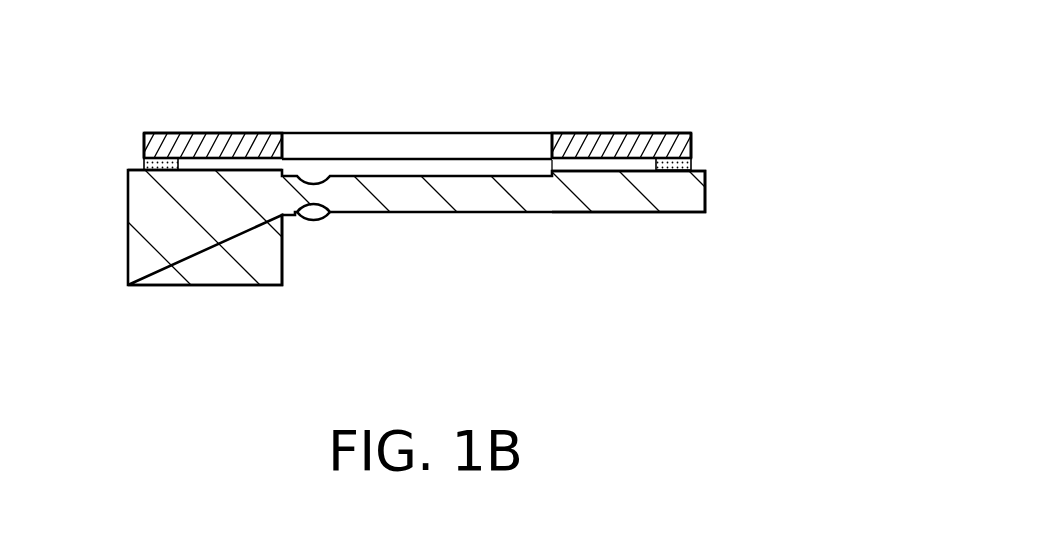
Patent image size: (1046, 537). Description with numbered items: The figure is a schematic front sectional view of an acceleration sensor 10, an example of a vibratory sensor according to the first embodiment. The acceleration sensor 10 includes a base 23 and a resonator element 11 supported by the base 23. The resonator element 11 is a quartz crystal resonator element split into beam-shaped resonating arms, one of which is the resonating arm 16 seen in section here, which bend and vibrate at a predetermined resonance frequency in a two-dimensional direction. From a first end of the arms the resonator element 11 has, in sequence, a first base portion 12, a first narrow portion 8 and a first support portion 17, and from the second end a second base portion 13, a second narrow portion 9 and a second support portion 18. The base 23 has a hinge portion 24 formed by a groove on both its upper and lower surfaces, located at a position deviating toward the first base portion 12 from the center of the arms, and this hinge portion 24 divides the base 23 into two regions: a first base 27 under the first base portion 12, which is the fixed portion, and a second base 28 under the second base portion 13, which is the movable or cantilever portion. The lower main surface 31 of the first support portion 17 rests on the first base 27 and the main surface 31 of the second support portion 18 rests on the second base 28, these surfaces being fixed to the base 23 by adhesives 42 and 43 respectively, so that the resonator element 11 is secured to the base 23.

The acceleration sensor 10 is at (712, 64).
The resonator element 11 is at (417, 89).
The first narrow portion 8 is at (221, 132).
The second narrow portion 9 is at (628, 137).
The first base portion 12 is at (268, 132).
The second base portion 13 is at (583, 135).
The resonating arm 16 is at (418, 143).
The first support portion 17 is at (173, 132).
The second support portion 18 is at (672, 137).
The base 23 is at (430, 230).
The hinge portion 24 is at (313, 207).
The first base 27 is at (205, 272).
The second base 28 is at (685, 205).
The main surface 31 is at (565, 163).
The adhesive 42 is at (145, 165).
The adhesive 43 is at (690, 158).